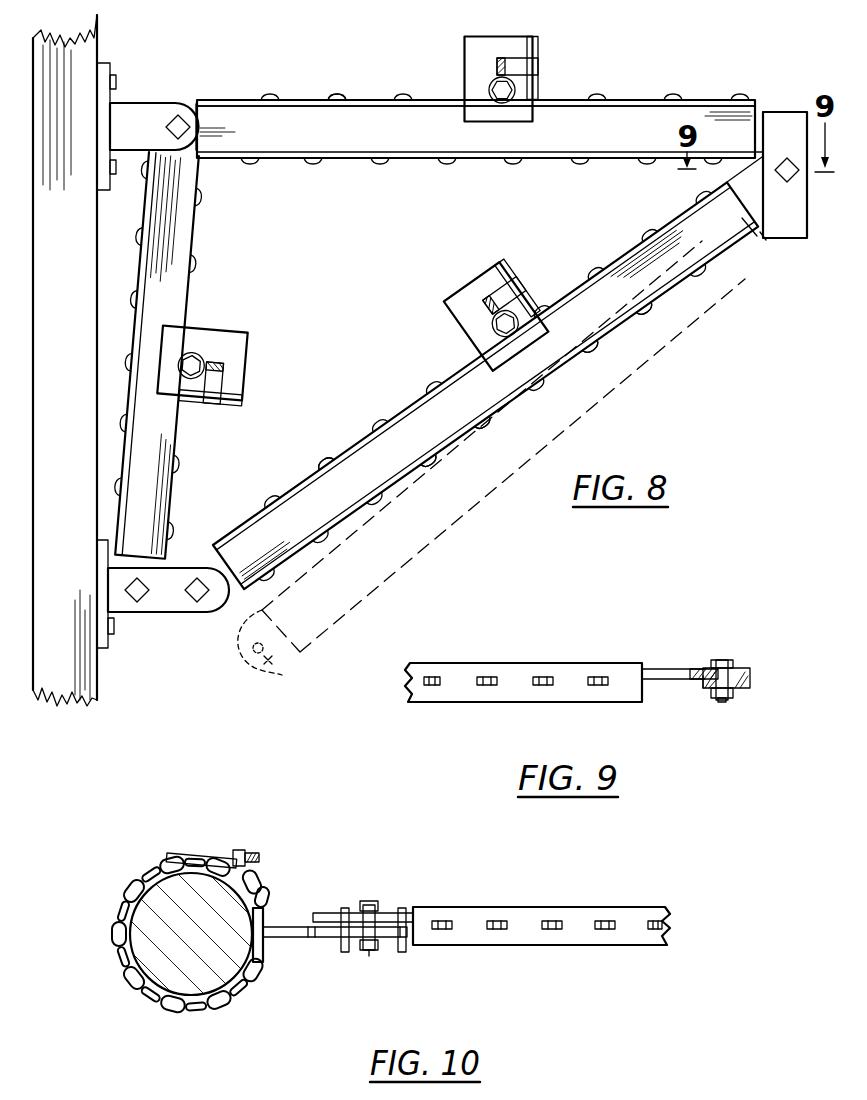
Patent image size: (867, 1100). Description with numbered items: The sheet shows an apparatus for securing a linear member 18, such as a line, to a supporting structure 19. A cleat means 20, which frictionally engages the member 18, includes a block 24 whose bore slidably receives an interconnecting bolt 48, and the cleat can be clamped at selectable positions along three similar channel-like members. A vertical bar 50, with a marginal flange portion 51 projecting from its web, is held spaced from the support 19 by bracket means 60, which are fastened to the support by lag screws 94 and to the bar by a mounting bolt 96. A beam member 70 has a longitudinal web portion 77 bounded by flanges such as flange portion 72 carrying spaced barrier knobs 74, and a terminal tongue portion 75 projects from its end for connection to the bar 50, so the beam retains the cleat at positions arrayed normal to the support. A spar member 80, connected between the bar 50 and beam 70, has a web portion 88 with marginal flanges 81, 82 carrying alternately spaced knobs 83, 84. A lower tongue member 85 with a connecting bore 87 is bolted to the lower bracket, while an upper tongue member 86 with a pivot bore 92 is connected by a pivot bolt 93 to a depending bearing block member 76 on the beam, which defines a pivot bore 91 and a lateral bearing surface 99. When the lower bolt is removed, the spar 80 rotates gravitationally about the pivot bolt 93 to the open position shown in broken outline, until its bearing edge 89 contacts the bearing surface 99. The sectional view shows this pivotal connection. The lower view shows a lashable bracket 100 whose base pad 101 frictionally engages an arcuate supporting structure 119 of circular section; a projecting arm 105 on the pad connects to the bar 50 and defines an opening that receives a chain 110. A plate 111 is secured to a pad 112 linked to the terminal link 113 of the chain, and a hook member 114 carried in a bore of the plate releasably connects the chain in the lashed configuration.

In FIG. 8, the linear member 18 is at (497, 66).
In FIG. 8, the supporting structure 19 is at (48, 344).
In FIG. 8, the cleat means 20 is at (388, 213).
In FIG. 8, the block 24 is at (247, 332).
In FIG. 8, the interconnecting bolt 48 is at (208, 352).
In FIG. 8, the vertical bar 50 is at (204, 439).
In FIG. 10, the vertical bar 50 is at (389, 903).
In FIG. 8, the marginal flange portion 51 is at (180, 492).
In FIG. 8, the bracket means 60 is at (148, 138).
In FIG. 8, the beam member 70 is at (299, 92).
In FIG. 10, the beam member 70 is at (507, 899).
In FIG. 8, the flange portion 72 is at (375, 97).
In FIG. 8, the barrier knob 74 is at (338, 97).
In FIG. 8, the terminal tongue portion 75 is at (197, 103).
In FIG. 8, the depending bearing block member 76 is at (772, 112).
In FIG. 8, the longitudinal web portion 77 is at (397, 140).
In FIG. 8, the spar member 80 is at (562, 286).
In FIG. 9, the spar member 80 is at (523, 652).
In FIG. 8, the marginal flange 81 is at (292, 478).
In FIG. 9, the marginal flange 81 is at (520, 670).
In FIG. 8, the marginal flange 82 is at (477, 435).
In FIG. 8, the knob 83 is at (313, 467).
In FIG. 9, the knob 83 is at (488, 677).
In FIG. 8, the knob 84 is at (392, 497).
In FIG. 8, the lower tongue member 85 is at (203, 563).
In FIG. 8, the upper tongue member 86 is at (737, 172).
In FIG. 9, the upper tongue member 86 is at (682, 645).
In FIG. 8, the connecting bore 87 is at (282, 675).
In FIG. 8, the web portion 88 is at (393, 455).
In FIG. 8, the bearing edge 89 is at (752, 237).
In FIG. 9, the pivot bore 91 is at (707, 692).
In FIG. 9, the pivot bore 92 is at (745, 670).
In FIG. 8, the pivot bolt 93 is at (797, 182).
In FIG. 8, the lag screw 94 is at (116, 82).
In FIG. 9, the mounting bolt 96 is at (740, 692).
In FIG. 10, the mounting bolt 96 is at (378, 950).
In FIG. 8, the lateral bearing surface 99 is at (767, 240).
In FIG. 9, the lateral bearing surface 99 is at (727, 660).
In FIG. 10, the lashable bracket 100 is at (356, 955).
In FIG. 10, the base pad 101 is at (266, 925).
In FIG. 10, the projecting arm 105 is at (316, 910).
In FIG. 10, the chain 110 is at (284, 875).
In FIG. 10, the plate 111 is at (242, 850).
In FIG. 10, the pad 112 is at (212, 852).
In FIG. 10, the terminal link 113 is at (260, 876).
In FIG. 10, the hook member 114 is at (182, 845).
In FIG. 10, the arcuate supporting structure 119 is at (163, 957).